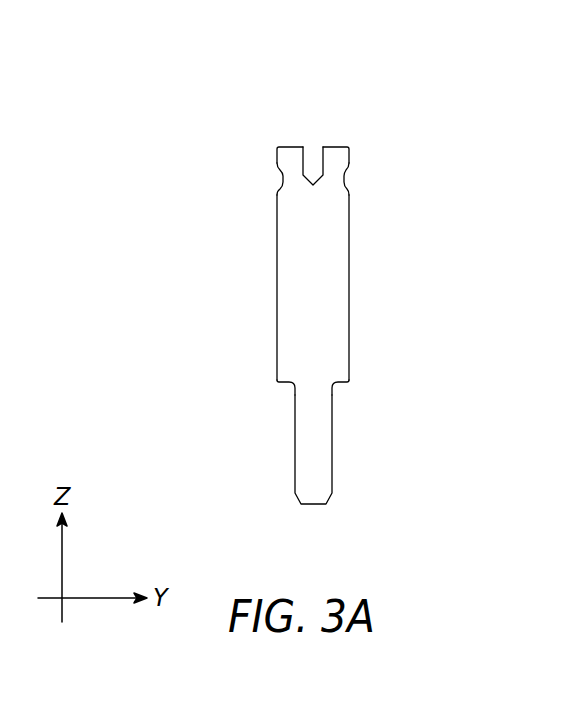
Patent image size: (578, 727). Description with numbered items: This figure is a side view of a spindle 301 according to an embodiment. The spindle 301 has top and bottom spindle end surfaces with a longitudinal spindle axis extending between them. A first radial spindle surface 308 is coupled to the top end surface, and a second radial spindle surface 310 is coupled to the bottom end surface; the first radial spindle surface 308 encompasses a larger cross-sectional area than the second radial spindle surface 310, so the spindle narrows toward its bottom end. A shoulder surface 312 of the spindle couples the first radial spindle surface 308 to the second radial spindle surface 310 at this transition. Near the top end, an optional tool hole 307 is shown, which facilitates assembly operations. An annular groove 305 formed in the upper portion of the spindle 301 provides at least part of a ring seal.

The spindle 301 is at (441, 150).
The annular groove 305 is at (353, 178).
The tool hole 307 is at (314, 152).
The first radial spindle surface 308 is at (215, 372).
The second radial spindle surface 310 is at (215, 383).
The shoulder surface 312 is at (286, 390).